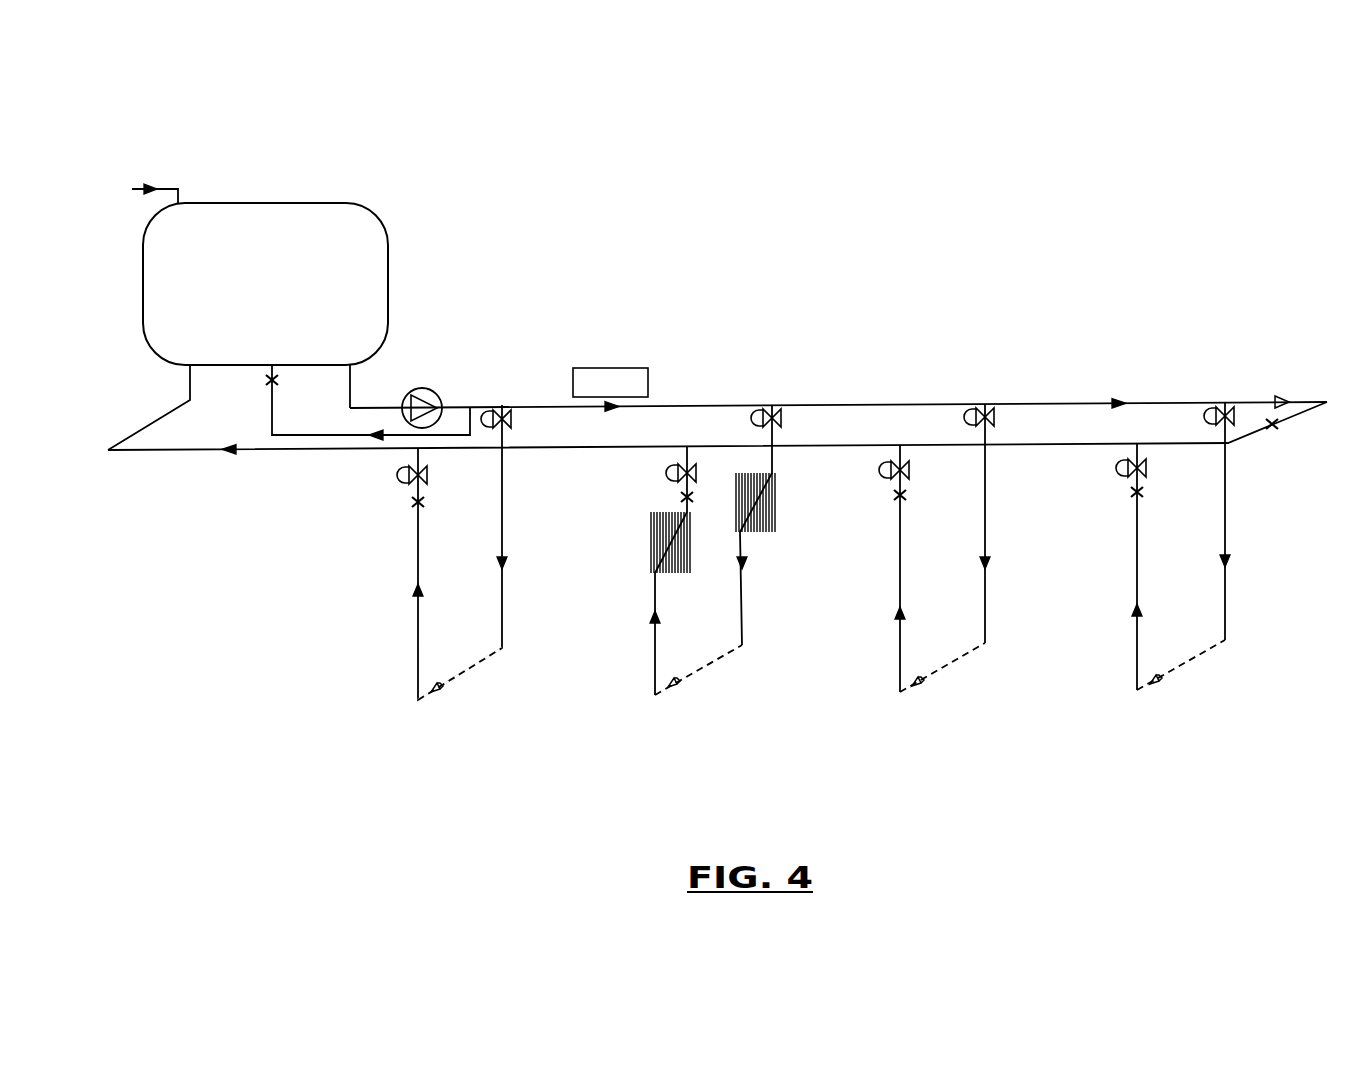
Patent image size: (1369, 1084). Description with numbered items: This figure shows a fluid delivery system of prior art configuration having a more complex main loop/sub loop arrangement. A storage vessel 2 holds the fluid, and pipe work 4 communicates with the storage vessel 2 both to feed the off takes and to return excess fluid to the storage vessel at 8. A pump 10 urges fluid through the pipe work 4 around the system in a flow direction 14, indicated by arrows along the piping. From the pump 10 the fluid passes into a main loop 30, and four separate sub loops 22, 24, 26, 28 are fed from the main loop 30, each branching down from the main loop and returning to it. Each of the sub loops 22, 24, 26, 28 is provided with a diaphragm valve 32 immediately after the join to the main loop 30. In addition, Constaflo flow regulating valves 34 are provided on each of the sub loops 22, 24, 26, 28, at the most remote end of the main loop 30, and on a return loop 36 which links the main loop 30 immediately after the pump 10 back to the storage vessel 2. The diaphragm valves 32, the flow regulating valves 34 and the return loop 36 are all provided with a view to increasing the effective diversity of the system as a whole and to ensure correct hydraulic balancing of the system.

The storage vessel 2 is at (267, 196).
The pipe work 4 is at (702, 405).
The return to the storage vessel 8 is at (188, 368).
The pump 10 is at (428, 388).
The flow direction 14 is at (612, 368).
The first sub loop 22 is at (420, 643).
The second sub loop 24 is at (655, 640).
The third sub loop 26 is at (900, 640).
The fourth sub loop 28 is at (1137, 640).
The main loop 30 is at (876, 395).
The diaphragm valve 32 is at (504, 405).
The flow regulating valve 34 is at (267, 377).
The return loop 36 is at (345, 437).